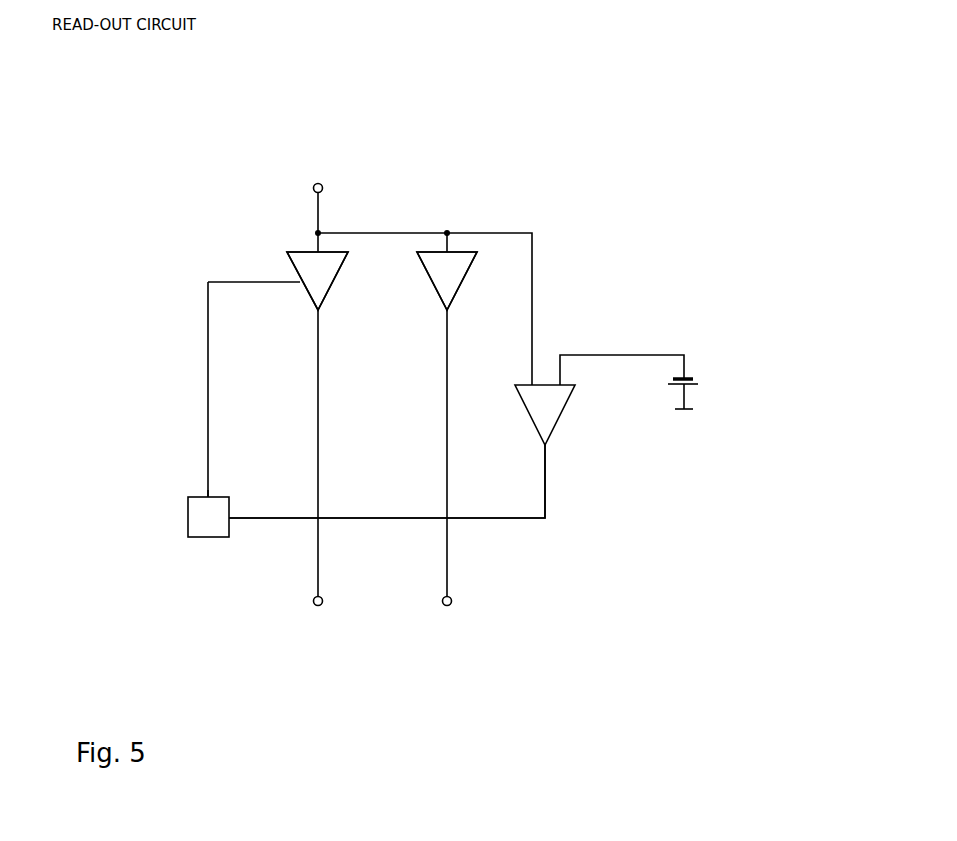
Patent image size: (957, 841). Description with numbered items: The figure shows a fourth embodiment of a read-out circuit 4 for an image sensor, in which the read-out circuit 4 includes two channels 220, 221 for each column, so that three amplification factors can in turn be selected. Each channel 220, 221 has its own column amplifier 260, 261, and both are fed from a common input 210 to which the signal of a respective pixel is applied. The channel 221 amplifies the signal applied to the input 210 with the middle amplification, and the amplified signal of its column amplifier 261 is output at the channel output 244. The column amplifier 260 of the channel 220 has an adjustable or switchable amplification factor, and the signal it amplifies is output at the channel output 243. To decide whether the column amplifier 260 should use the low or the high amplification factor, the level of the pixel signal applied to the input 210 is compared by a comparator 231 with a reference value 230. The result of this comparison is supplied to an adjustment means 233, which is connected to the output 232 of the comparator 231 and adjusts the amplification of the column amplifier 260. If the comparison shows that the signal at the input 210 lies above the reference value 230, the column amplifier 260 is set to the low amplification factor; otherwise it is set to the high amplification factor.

The read-out circuit 4 is at (121, 128).
The input 210 is at (315, 172).
The channel 220 is at (360, 188).
The channel 221 is at (460, 192).
The column amplifier 260 is at (285, 250).
The column amplifier 261 is at (480, 267).
The reference value 230 is at (702, 393).
The comparator 231 is at (571, 415).
The output 232 is at (553, 524).
The adjustment means 233 is at (184, 518).
The channel output 243 is at (316, 612).
The channel output 244 is at (445, 612).